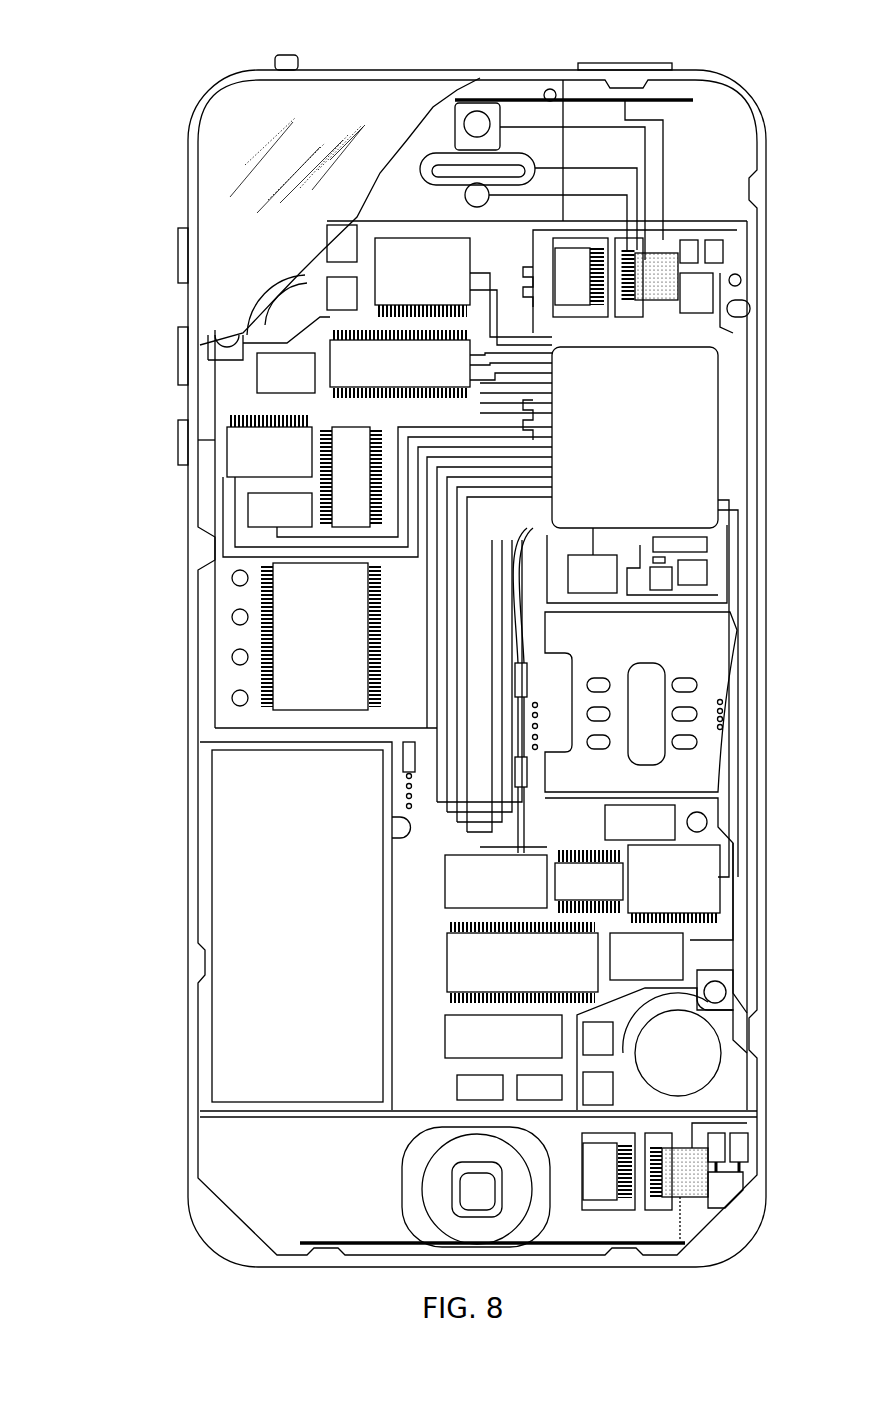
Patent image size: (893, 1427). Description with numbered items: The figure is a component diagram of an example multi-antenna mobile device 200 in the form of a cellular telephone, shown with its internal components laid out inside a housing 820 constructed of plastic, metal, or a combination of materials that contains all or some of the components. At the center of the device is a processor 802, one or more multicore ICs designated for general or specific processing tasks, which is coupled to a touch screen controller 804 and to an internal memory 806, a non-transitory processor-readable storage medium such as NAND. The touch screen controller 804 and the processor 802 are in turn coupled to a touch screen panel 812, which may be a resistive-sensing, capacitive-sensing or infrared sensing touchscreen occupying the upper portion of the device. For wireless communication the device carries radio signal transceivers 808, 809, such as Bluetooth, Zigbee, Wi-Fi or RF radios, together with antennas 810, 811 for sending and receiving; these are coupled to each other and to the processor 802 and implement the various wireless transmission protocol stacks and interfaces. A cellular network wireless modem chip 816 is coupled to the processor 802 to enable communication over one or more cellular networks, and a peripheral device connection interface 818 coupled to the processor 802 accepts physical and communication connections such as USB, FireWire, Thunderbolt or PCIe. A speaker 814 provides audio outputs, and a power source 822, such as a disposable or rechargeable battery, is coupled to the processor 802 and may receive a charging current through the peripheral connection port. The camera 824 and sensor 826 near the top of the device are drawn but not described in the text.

The multi-antenna mobile device 200 is at (160, 88).
The processor 802 is at (657, 448).
The touch screen controller 804 is at (445, 284).
The internal memory 806 is at (419, 375).
The radio signal transceiver 808 is at (670, 252).
The radio signal transceiver 809 is at (707, 1185).
The antenna 810 is at (670, 99).
The antenna 811 is at (642, 1244).
The touch screen panel 812 is at (214, 183).
The speaker 814 is at (437, 150).
The cellular network wireless modem chip 816 is at (542, 975).
The peripheral device connection interface 818 is at (525, 1047).
The housing 820 is at (190, 1130).
The power source 822 is at (318, 937).
The camera 824 is at (481, 108).
The sensor 826 is at (484, 184).